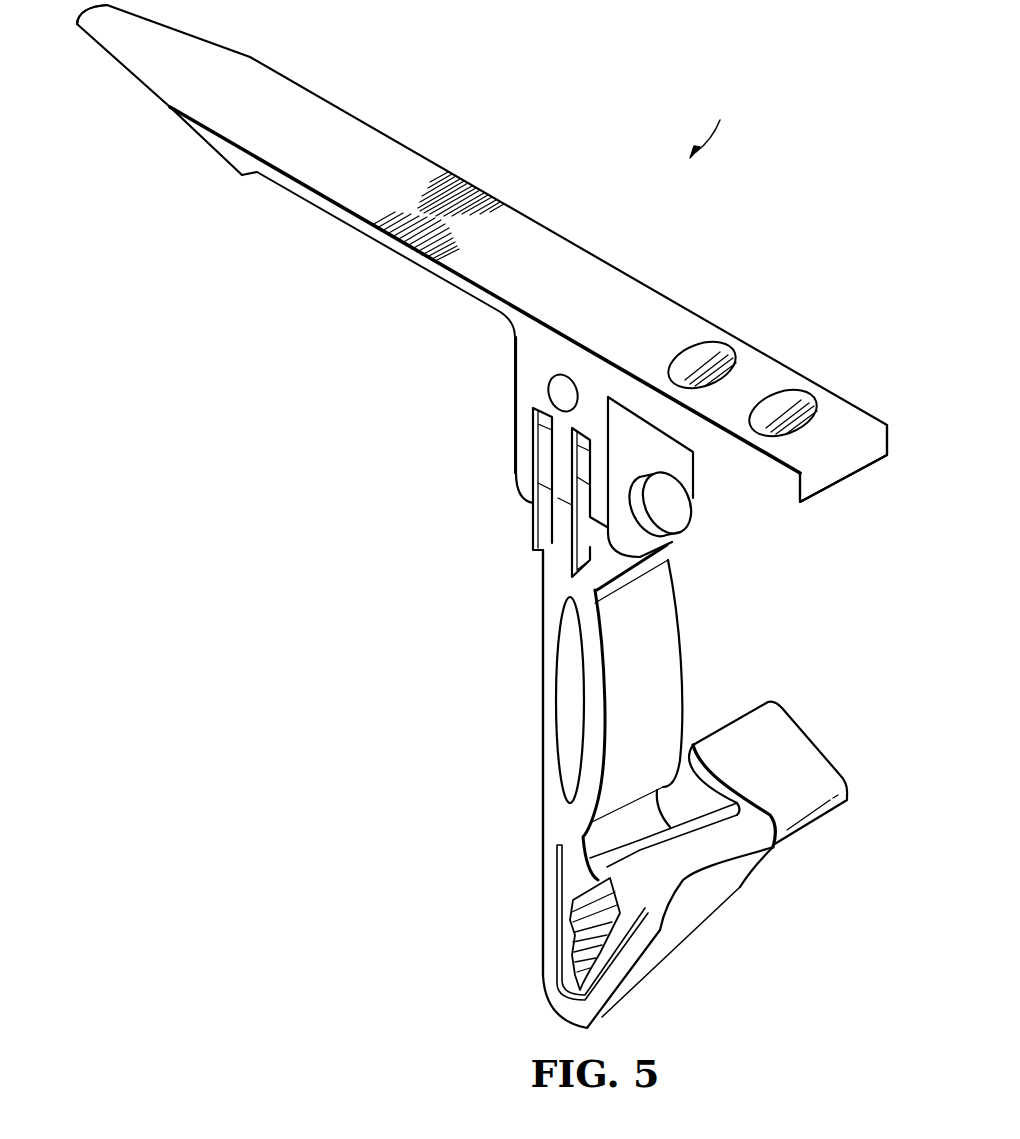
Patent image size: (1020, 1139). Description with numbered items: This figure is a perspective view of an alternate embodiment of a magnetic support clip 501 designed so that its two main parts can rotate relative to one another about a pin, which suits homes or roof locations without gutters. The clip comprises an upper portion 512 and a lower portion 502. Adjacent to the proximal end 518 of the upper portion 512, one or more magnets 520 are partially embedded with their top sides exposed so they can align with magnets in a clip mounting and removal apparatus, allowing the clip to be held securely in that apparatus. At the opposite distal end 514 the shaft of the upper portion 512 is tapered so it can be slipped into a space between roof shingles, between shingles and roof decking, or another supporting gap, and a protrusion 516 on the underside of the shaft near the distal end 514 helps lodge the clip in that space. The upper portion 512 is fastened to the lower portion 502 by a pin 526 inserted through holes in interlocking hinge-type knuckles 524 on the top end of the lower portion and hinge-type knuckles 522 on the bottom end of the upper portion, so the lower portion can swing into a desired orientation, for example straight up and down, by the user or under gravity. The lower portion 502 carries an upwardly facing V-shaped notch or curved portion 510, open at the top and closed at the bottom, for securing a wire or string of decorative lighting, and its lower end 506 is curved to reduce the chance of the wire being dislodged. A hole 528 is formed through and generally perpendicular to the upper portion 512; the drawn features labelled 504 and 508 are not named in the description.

The magnetic support clip 501 is at (718, 124).
The lower portion 502 is at (543, 738).
The tongue 504 is at (545, 547).
The lower end 506 is at (795, 722).
The plate 508 is at (675, 962).
The V-shaped notch 510 is at (578, 943).
The upper portion 512 is at (390, 262).
The distal end 514 is at (110, 58).
The protrusion 516 is at (254, 178).
The proximal end 518 is at (865, 406).
The magnets 520 is at (702, 353).
The hinge-type knuckles 522 is at (540, 445).
The interlocking hinge-type knuckles 524 is at (538, 432).
The pin 526 is at (680, 510).
The hole 528 is at (550, 393).